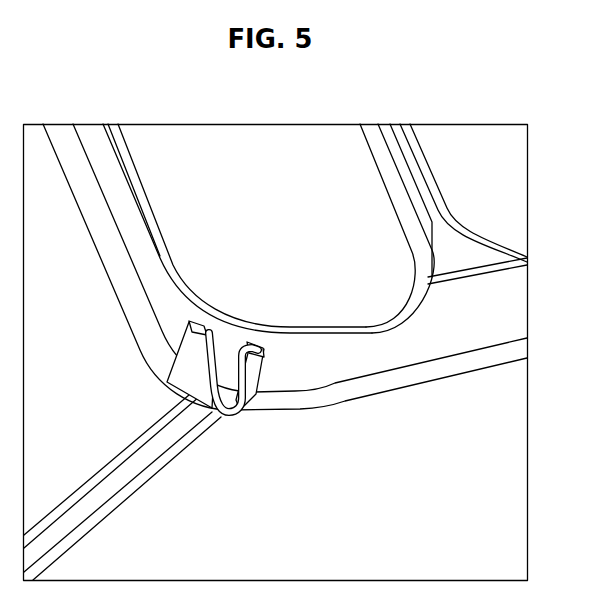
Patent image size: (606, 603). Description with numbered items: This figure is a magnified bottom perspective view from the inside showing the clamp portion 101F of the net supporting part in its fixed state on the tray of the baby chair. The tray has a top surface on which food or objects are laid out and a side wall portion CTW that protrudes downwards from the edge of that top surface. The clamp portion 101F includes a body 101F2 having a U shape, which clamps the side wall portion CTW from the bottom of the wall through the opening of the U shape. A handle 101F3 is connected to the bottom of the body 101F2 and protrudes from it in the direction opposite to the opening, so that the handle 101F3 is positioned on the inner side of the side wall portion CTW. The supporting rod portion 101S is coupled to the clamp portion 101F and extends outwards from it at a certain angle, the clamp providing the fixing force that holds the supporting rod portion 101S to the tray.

The supporting rod portion 101S is at (88, 481).
The clamp portion 101F is at (244, 430).
The body 101F2 is at (195, 385).
The handle 101F3 is at (237, 379).
The side wall portion CTW is at (423, 398).